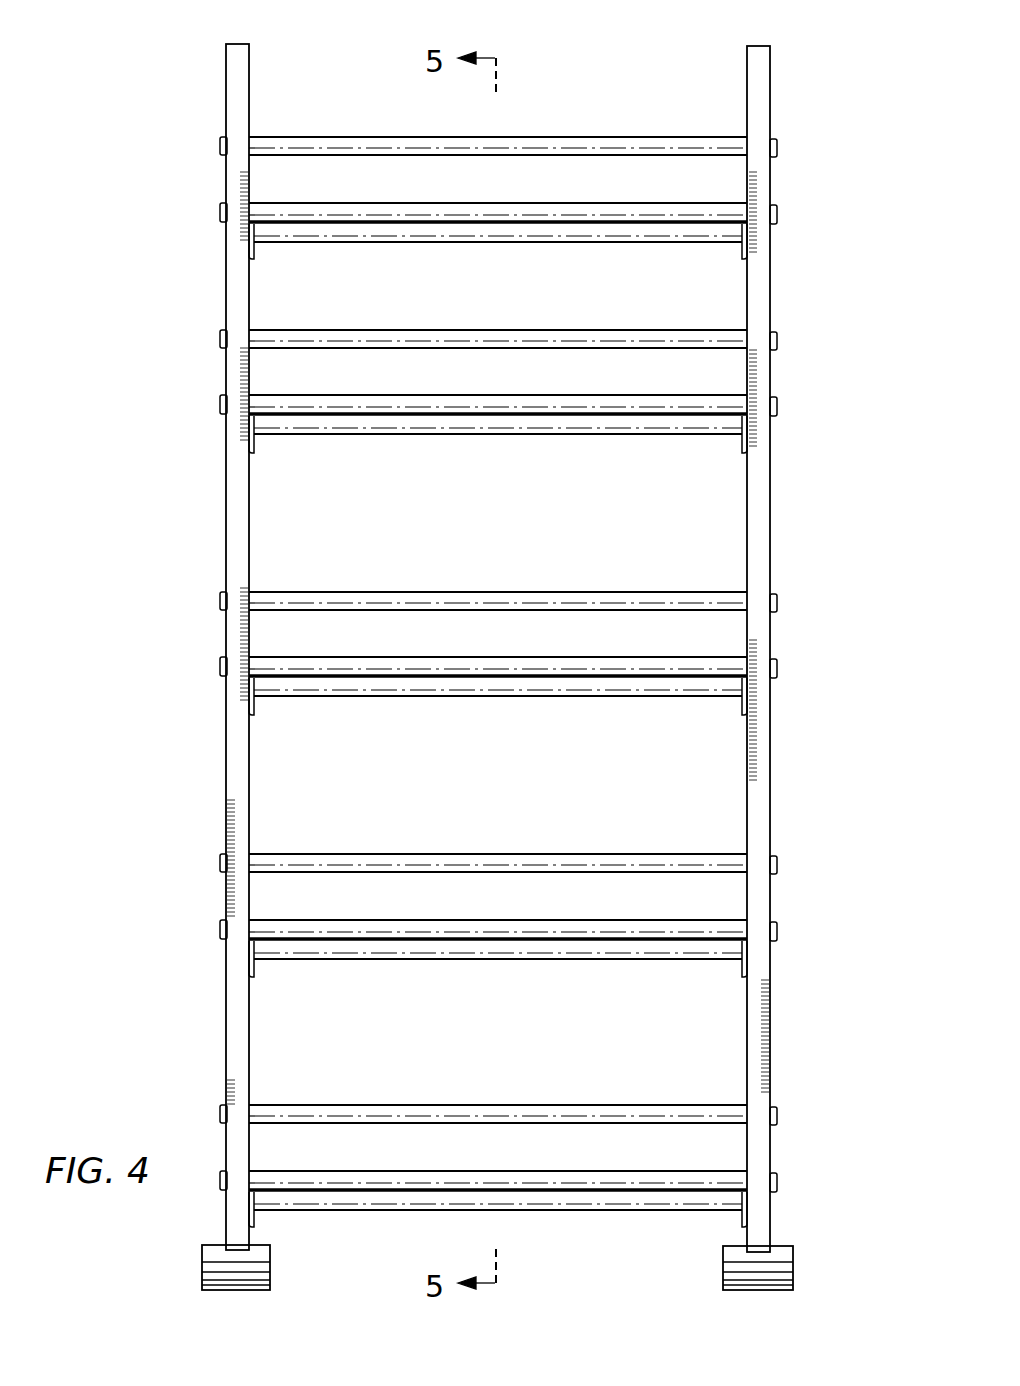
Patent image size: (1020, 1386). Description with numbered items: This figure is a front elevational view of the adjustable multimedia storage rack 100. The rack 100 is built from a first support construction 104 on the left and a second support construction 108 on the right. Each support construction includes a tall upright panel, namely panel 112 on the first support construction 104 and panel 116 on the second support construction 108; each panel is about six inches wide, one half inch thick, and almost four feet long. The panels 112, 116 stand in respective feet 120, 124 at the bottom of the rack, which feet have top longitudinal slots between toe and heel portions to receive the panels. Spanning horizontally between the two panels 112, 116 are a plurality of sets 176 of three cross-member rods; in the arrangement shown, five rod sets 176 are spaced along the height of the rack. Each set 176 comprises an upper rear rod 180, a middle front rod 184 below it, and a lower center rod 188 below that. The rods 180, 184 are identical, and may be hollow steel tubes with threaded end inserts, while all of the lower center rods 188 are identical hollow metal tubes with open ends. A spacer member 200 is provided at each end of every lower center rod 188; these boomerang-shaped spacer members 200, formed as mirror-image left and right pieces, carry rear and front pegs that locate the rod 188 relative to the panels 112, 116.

The adjustable multimedia storage rack 100 is at (795, 241).
The first support construction 104 is at (193, 797).
The second support construction 108 is at (783, 741).
The upright panel 112 is at (237, 98).
The upright panel 116 is at (770, 552).
The foot 120 is at (217, 1268).
The foot 124 is at (775, 1275).
The set of rods 176 is at (470, 984).
The upper rear rod 180 is at (610, 137).
The middle front rod 184 is at (615, 212).
The lower center rod 188 is at (625, 232).
The spacer member 200 is at (255, 712).